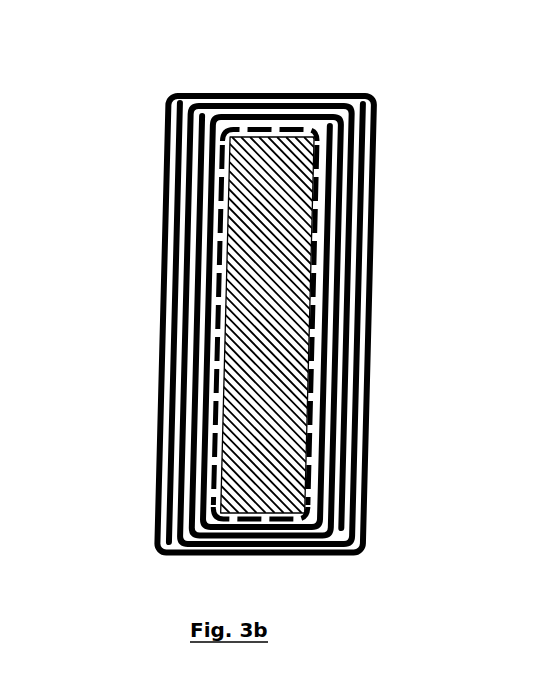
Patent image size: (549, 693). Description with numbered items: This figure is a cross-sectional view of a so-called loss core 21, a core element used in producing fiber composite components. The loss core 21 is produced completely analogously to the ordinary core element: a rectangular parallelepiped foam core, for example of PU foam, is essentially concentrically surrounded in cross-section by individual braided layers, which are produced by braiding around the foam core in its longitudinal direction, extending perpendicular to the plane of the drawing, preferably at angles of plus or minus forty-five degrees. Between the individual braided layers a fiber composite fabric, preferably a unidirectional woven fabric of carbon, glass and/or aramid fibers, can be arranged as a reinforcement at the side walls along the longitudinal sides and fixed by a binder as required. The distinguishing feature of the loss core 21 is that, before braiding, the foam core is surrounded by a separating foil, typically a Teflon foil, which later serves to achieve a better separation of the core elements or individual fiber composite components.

The loss core 21 is at (113, 167).